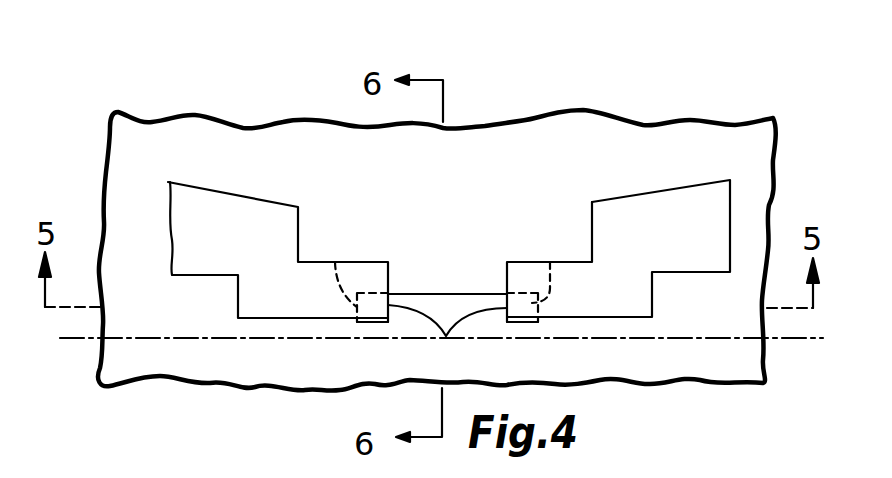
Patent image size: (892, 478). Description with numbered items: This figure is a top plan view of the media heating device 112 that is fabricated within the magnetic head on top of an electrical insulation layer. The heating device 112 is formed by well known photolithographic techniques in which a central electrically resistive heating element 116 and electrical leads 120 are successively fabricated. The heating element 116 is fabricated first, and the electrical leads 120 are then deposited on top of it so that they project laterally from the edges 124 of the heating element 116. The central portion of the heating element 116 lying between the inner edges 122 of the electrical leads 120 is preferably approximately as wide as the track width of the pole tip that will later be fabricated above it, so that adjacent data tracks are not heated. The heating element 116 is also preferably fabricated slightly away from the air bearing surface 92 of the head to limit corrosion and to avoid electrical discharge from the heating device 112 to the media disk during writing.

The heating device 112 is at (444, 203).
The electrically resistive heating element 116 is at (443, 300).
The electrical leads 120 is at (330, 298).
The inner edges 122 is at (444, 337).
The edges of the heating element 124 is at (335, 263).
The air bearing surface 92 is at (783, 341).